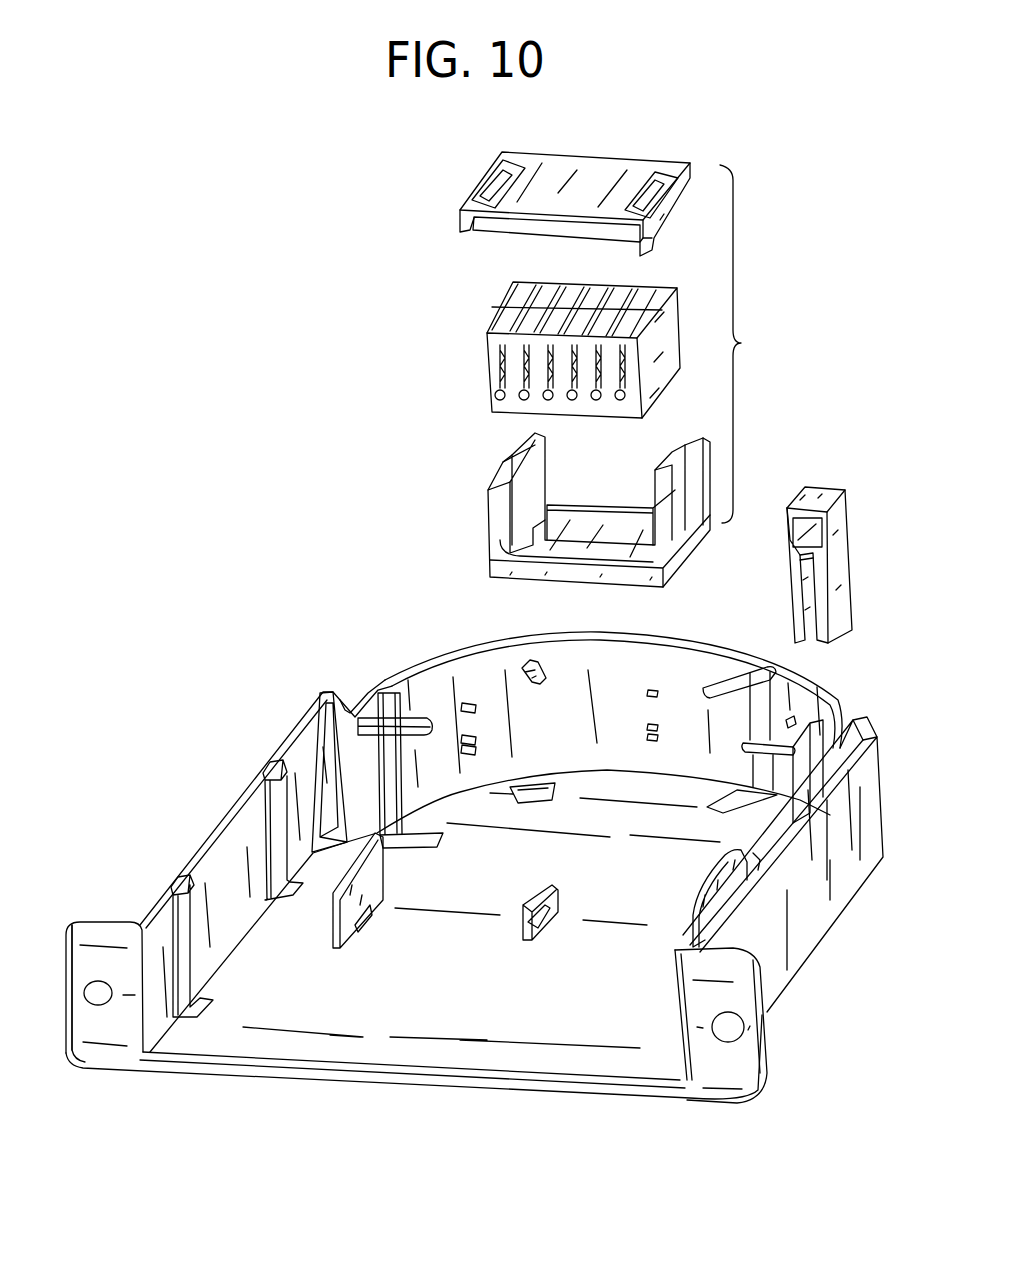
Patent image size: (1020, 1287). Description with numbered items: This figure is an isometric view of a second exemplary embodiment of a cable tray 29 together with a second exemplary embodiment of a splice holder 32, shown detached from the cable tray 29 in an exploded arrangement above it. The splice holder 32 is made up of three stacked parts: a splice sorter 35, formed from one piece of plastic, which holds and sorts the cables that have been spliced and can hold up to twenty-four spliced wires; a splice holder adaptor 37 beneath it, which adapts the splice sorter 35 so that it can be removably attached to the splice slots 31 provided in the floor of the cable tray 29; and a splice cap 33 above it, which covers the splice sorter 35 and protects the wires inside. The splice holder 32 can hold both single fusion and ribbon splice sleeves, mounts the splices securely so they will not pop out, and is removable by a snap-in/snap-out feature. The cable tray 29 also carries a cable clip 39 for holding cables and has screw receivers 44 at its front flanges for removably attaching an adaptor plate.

The cable tray 29 is at (158, 812).
The splice slots 31 is at (367, 927).
The splice holder 32 is at (750, 344).
The splice cap 33 is at (446, 197).
The splice sorter 35 is at (468, 347).
The splice holder adaptor 37 is at (468, 512).
The cable clip 39 is at (858, 568).
The screw receivers 44 is at (83, 1012).